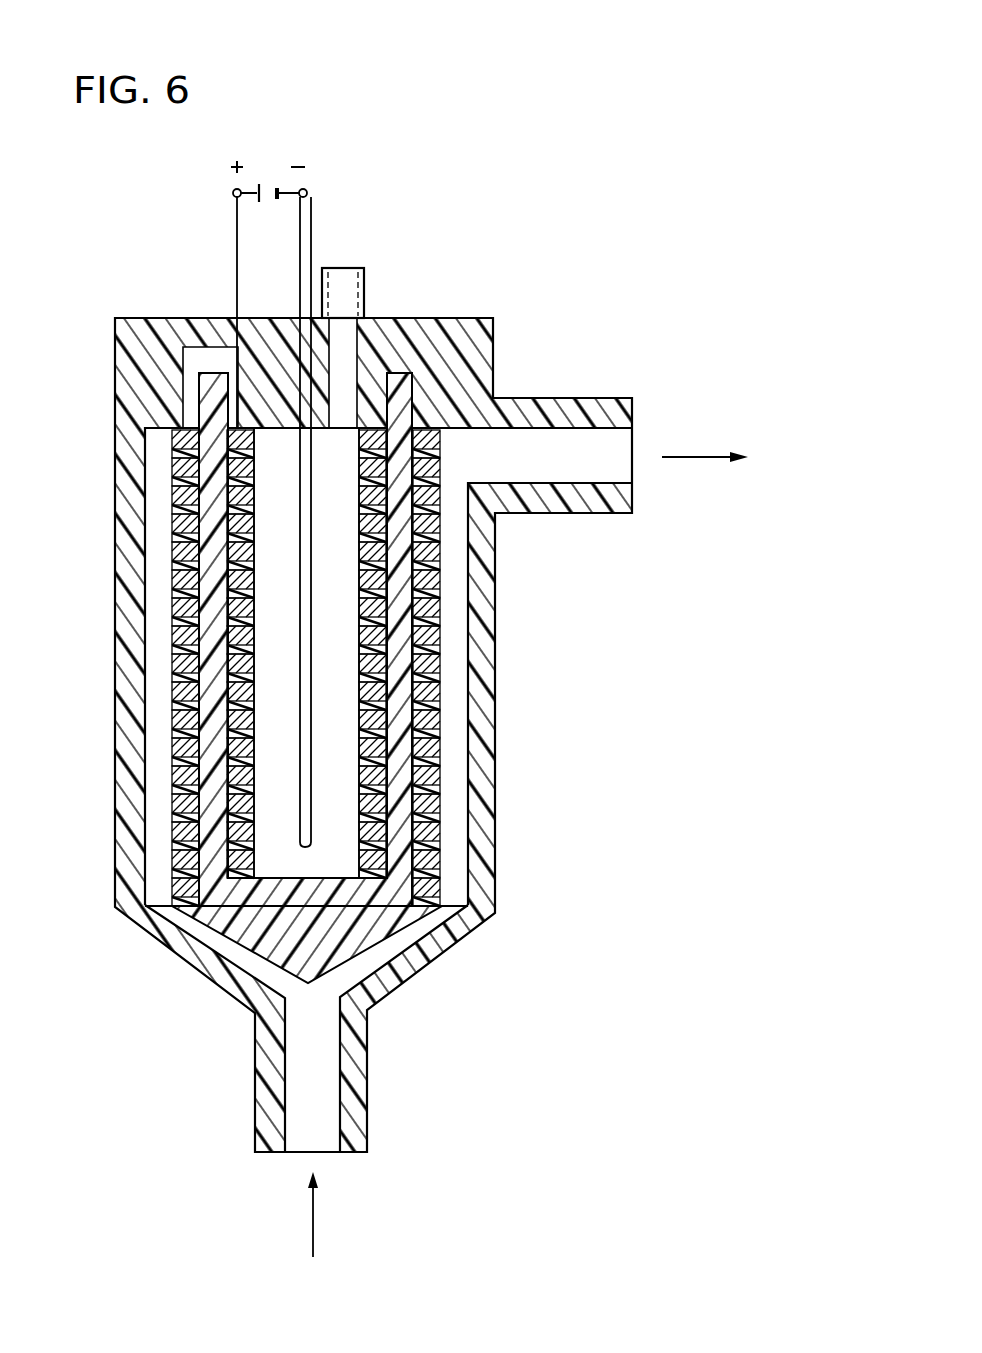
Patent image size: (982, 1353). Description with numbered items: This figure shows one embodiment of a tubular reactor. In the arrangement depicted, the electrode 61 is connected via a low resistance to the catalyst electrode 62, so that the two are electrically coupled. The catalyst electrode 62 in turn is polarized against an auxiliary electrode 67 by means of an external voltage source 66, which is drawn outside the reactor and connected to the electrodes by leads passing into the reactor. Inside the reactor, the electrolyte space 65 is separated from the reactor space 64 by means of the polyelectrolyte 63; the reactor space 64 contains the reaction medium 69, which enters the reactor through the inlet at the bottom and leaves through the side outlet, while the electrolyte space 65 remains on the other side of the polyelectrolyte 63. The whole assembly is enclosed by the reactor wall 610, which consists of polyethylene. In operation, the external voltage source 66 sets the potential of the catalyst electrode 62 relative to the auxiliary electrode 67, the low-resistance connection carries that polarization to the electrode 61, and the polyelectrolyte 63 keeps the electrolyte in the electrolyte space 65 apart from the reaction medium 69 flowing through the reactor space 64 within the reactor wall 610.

The reactor wall 610 is at (493, 338).
The external voltage source 66 is at (269, 186).
The catalyst electrode 62 is at (395, 560).
The polyelectrolyte 63 is at (400, 668).
The electrode 61 is at (428, 725).
The electrolyte space 65 is at (340, 780).
The auxiliary electrode 67 is at (308, 836).
The reactor space 64 is at (470, 887).
The reaction medium 69 is at (318, 1230).